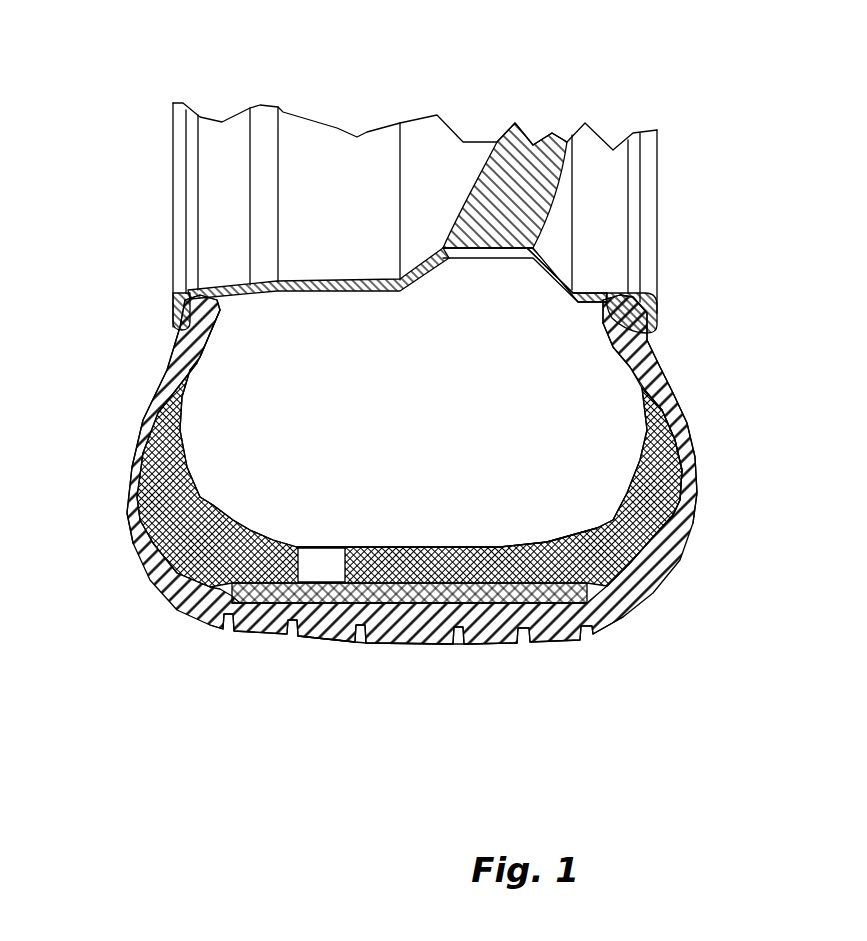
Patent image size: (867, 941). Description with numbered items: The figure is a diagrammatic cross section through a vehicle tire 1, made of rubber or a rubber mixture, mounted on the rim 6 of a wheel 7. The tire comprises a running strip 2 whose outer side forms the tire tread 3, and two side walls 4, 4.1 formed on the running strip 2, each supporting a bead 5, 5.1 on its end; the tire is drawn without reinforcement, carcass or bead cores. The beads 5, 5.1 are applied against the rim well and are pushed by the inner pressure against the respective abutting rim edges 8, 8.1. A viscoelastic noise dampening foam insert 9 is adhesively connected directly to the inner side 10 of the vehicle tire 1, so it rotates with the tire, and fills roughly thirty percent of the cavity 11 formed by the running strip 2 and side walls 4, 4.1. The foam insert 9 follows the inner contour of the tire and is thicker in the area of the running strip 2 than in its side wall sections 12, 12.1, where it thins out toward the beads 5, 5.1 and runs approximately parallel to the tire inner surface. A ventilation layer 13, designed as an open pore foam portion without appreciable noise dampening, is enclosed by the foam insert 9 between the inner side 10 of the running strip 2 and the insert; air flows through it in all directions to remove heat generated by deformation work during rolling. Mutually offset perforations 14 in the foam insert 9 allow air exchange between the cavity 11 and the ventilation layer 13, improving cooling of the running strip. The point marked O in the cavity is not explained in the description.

The vehicle tire 1 is at (150, 607).
The running strip 2 is at (451, 611).
The tire tread 3 is at (410, 646).
The side wall 4 is at (126, 468).
The side wall 4.1 is at (693, 441).
The bead 5 is at (214, 321).
The bead 5.1 is at (604, 324).
The rim 6 is at (297, 279).
The wheel 7 is at (422, 98).
The rim edge 8 is at (170, 303).
The rim edge 8.1 is at (659, 314).
The foam insert 9 is at (453, 543).
The inner side 10 is at (367, 598).
The cavity 11 is at (392, 388).
The side wall section 12 is at (156, 501).
The side wall section 12.1 is at (629, 538).
The ventilation layer 13 is at (291, 599).
The perforations 14 is at (310, 577).
The center O is at (243, 533).